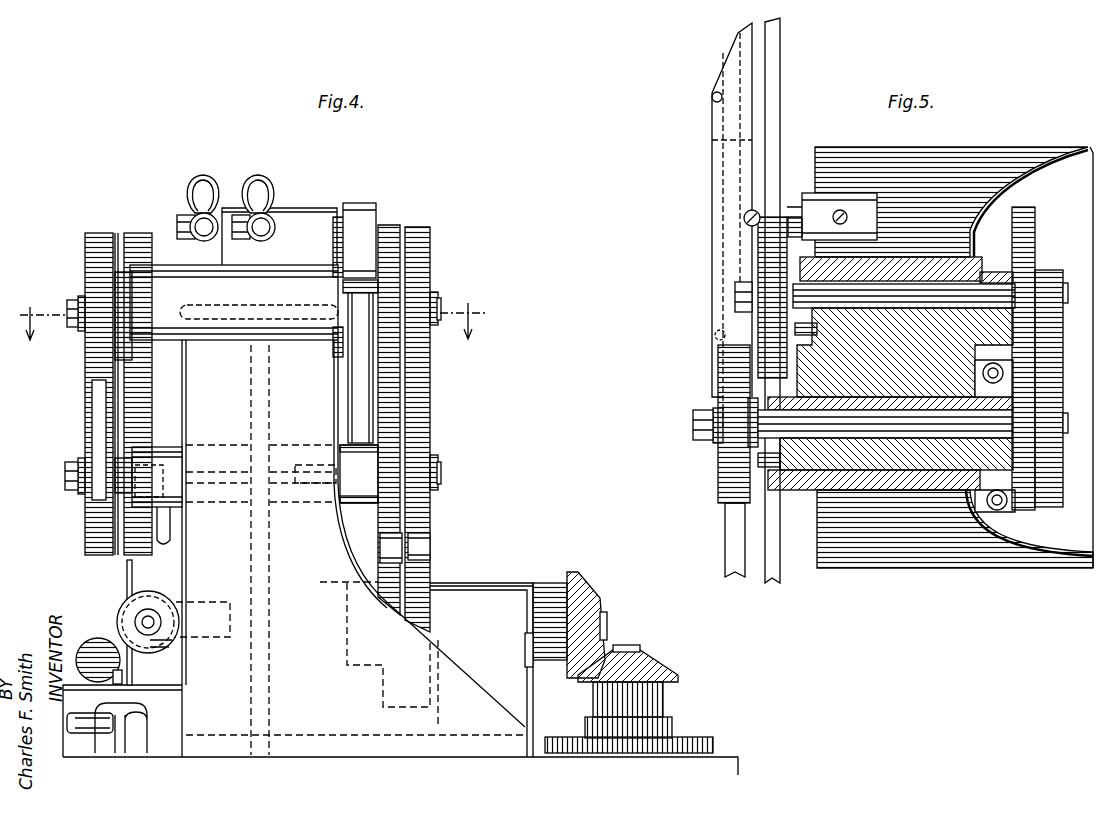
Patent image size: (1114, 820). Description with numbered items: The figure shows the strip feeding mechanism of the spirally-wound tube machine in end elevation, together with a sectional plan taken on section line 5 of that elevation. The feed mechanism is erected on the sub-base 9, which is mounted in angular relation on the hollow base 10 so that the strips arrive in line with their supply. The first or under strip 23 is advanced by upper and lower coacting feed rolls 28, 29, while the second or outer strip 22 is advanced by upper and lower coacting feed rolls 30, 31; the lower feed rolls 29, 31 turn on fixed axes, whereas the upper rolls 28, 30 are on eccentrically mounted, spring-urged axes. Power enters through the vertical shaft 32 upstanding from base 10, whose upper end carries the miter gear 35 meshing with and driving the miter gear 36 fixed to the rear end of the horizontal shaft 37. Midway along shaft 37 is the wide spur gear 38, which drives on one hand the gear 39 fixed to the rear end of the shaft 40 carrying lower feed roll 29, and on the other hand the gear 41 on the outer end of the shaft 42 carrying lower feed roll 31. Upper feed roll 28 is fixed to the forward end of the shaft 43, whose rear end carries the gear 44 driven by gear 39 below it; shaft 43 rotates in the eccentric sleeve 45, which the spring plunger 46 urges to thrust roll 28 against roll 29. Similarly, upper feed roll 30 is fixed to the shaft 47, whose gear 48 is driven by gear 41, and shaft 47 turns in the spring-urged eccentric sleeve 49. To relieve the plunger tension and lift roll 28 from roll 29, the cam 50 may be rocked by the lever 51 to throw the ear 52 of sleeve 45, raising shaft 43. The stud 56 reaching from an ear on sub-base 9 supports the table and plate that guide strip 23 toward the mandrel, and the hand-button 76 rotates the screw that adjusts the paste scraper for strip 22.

In FIG. 4, the section line 5— 5 is at (253, 321).
In FIG. 4, the sub-base 9 is at (400, 491).
In FIG. 5, the sub-base 9 is at (913, 548).
In FIG. 4, the hollow base 10 is at (732, 752).
In FIG. 5, the second or outer strip 22 is at (775, 548).
In FIG. 5, the first or under strip 23 is at (727, 543).
In FIG. 4, the upper feed roll 28 is at (85, 368).
In FIG. 5, the upper feed roll 28 is at (718, 480).
In FIG. 4, the lower feed roll 29 is at (93, 433).
In FIG. 4, the upper feed roll 30 is at (140, 237).
In FIG. 5, the upper feed roll 30 is at (760, 360).
In FIG. 4, the lower feed roll 31 is at (118, 567).
In FIG. 4, the vertical shaft 32 is at (630, 648).
In FIG. 4, the miter gear 35 is at (678, 667).
In FIG. 4, the miter gear 36 is at (588, 582).
In FIG. 4, the horizontal shaft 37 is at (605, 622).
In FIG. 4, the wide spur gear 38 is at (430, 572).
In FIG. 4, the gear 39 is at (430, 530).
In FIG. 4, the shaft 40 is at (433, 458).
In FIG. 4, the gear 41 is at (413, 515).
In FIG. 4, the shaft 42 is at (440, 475).
In FIG. 4, the shaft 43 is at (435, 302).
In FIG. 5, the shaft 43 is at (930, 428).
In FIG. 4, the gear 44 is at (430, 245).
In FIG. 5, the gear 44 is at (1063, 480).
In FIG. 5, the eccentric sleeve 45 is at (850, 478).
In FIG. 4, the spring plunger 46 is at (373, 402).
In FIG. 5, the spring plunger 46 is at (990, 517).
In FIG. 4, the shaft 47 is at (440, 305).
In FIG. 5, the shaft 47 is at (890, 288).
In FIG. 4, the gear 48 is at (390, 228).
In FIG. 5, the gear 48 is at (1035, 237).
In FIG. 5, the eccentric sleeve 49 is at (923, 313).
In FIG. 4, the cam 50 is at (360, 203).
In FIG. 4, the lever 51 is at (273, 185).
In FIG. 4, the ear 52 is at (338, 222).
In FIG. 5, the stud 56 is at (790, 207).
In FIG. 4, the hand-button 76 is at (118, 610).